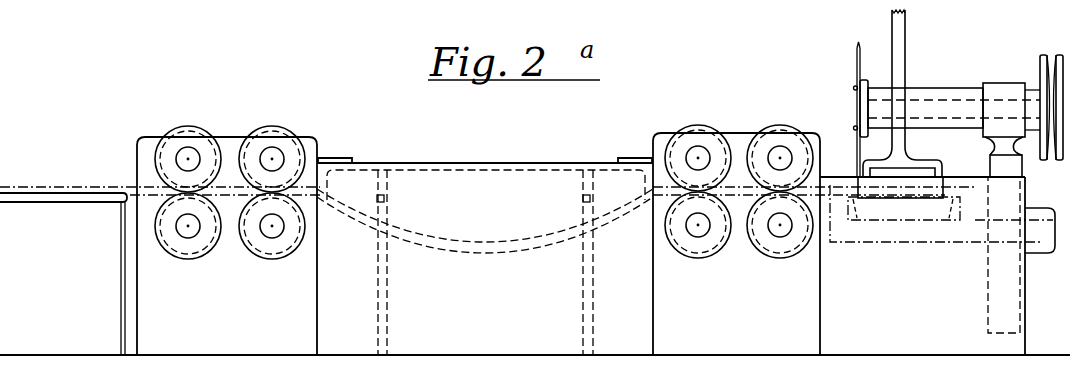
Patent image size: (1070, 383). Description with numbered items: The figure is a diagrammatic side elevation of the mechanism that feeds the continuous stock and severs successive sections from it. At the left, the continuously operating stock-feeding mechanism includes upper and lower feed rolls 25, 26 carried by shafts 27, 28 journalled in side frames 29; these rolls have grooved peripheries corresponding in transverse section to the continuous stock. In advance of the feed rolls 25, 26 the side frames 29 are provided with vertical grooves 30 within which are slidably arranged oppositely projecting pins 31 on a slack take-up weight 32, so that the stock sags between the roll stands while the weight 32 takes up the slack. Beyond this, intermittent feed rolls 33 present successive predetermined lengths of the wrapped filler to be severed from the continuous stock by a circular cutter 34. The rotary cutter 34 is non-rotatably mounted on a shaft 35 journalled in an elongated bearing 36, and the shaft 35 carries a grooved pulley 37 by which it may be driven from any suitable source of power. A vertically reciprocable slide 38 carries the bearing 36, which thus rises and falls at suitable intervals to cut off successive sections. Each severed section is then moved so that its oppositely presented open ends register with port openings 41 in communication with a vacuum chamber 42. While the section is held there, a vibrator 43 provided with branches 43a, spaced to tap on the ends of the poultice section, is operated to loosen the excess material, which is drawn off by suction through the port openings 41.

The upper feed roll 25 is at (185, 126).
The lower feed roll 26 is at (177, 255).
The shaft 27 is at (184, 159).
The shaft 28 is at (184, 226).
The side frames 29 is at (227, 246).
The vertical grooves 30 is at (386, 312).
The pins 31 is at (386, 199).
The slack take-up weight 32 is at (479, 169).
The intermittent feed rolls 33 is at (772, 130).
The circular cutter 34 is at (855, 57).
The shaft 35 is at (964, 99).
The elongated bearing 36 is at (917, 88).
The grooved pulley 37 is at (1050, 60).
The vertically reciprocable slide 38 is at (1013, 170).
The port openings 41 is at (904, 218).
The vacuum chamber 42 is at (915, 243).
The vibrator 43 is at (891, 18).
The branches 43a is at (900, 184).